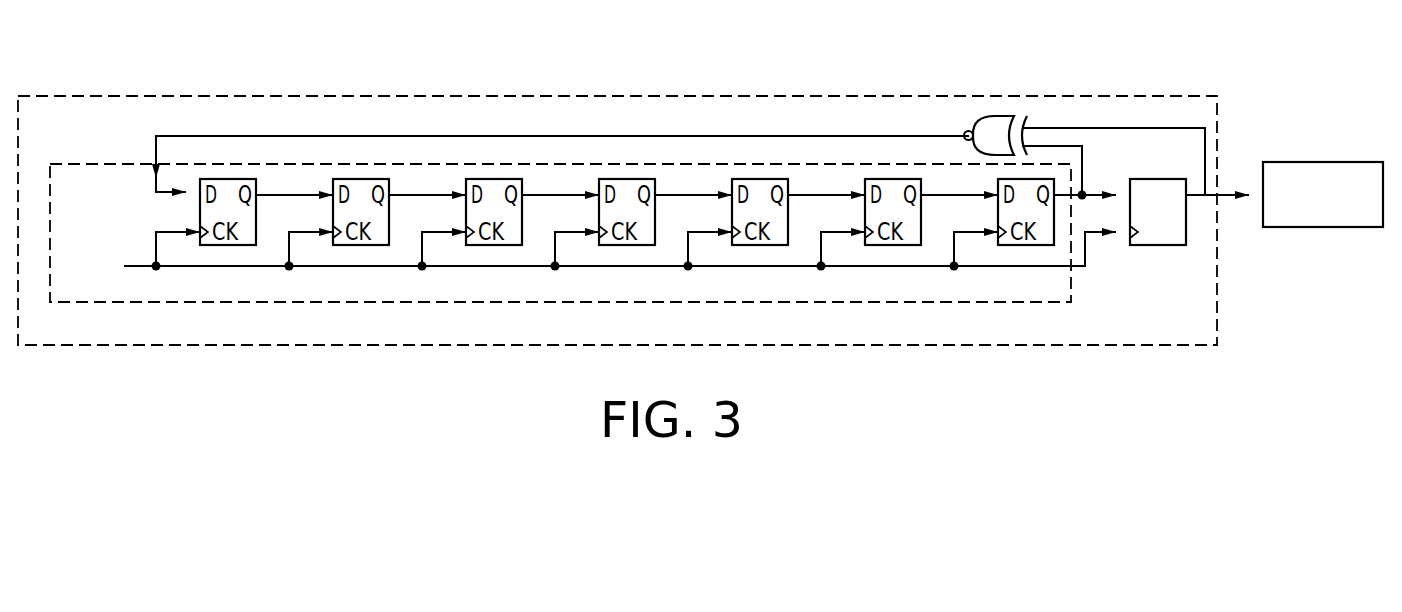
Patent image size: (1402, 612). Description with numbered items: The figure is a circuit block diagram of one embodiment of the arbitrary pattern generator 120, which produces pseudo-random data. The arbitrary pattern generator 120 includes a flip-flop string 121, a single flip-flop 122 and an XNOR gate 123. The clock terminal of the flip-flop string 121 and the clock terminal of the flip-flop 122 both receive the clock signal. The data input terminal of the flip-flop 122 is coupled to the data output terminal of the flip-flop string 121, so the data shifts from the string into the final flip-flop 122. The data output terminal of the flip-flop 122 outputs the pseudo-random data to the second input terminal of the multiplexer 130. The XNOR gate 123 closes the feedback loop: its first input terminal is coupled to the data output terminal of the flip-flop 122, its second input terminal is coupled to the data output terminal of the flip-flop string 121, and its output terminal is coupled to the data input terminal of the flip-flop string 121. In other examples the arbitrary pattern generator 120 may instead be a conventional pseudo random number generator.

The arbitrary pattern generator 120 is at (1218, 111).
The flip-flop string 121 is at (1003, 303).
The flip-flop 122 is at (1158, 247).
The XNOR gate 123 is at (1004, 116).
The multiplexer 130 is at (1328, 228).